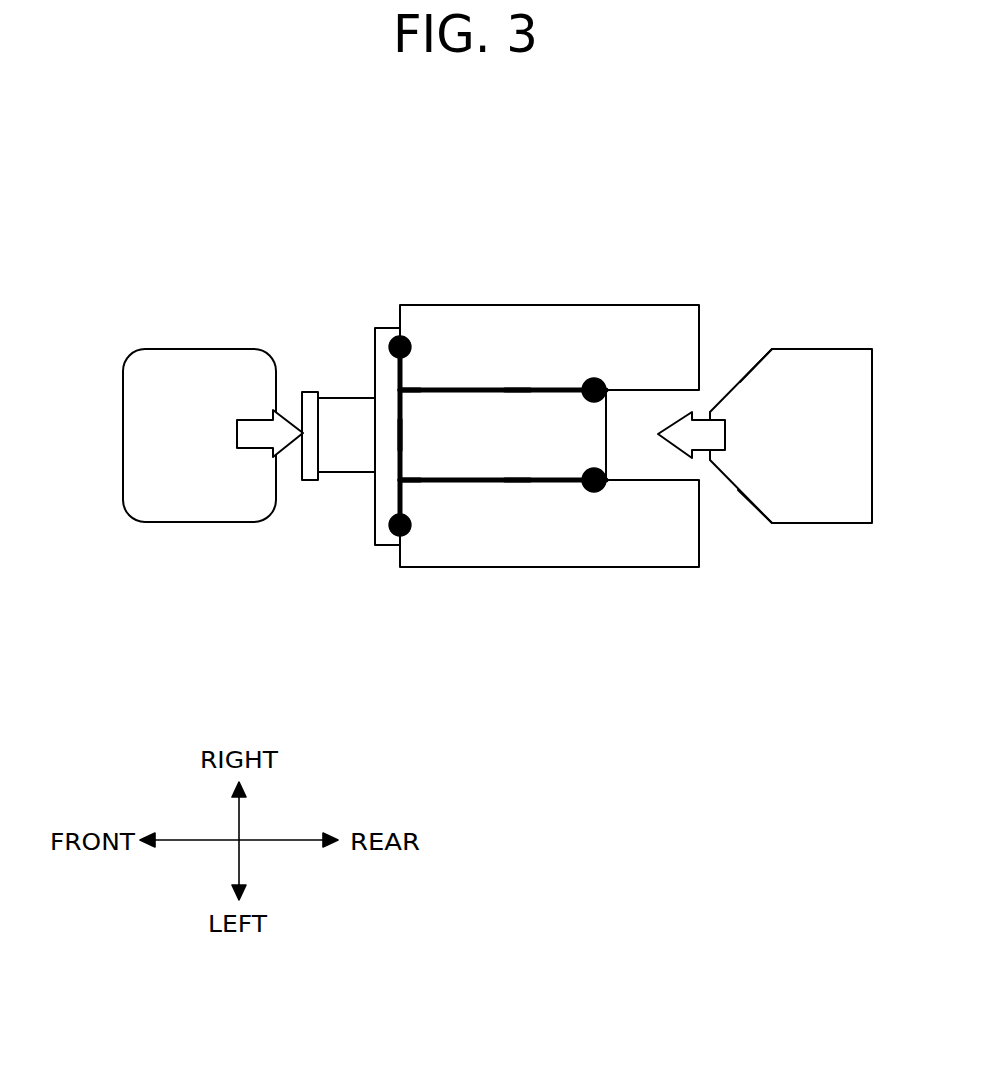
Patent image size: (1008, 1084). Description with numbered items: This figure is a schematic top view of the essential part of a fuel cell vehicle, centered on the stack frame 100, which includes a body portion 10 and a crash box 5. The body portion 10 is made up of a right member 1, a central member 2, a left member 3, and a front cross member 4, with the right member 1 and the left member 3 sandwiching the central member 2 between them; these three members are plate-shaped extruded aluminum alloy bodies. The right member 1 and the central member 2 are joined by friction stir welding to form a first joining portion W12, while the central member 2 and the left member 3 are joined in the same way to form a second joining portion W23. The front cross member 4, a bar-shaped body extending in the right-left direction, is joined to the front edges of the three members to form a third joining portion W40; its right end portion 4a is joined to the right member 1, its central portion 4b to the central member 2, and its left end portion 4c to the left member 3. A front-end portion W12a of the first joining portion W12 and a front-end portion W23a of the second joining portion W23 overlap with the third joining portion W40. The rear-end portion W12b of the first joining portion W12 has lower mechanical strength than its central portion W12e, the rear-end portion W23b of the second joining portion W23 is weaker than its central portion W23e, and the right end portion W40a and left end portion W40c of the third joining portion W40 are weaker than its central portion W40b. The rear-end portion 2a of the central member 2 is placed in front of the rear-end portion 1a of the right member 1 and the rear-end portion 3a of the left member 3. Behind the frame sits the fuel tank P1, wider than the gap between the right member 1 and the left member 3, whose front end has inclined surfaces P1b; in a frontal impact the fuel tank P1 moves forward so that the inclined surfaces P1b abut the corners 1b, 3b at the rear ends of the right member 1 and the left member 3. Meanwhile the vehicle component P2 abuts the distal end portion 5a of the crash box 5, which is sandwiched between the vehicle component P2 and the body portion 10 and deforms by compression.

The stack frame 100 is at (702, 176).
The right member 1 is at (675, 305).
The rear-end portion of the right member 1a is at (702, 380).
The corner of the right member 1b is at (707, 392).
The central member 2 is at (506, 449).
The rear-end portion of the central member 2a is at (608, 414).
The left member 3 is at (672, 568).
The rear-end portion of the left member 3a is at (702, 524).
The corner of the left member 3b is at (706, 487).
The front cross member 4 is at (364, 328).
The right end portion 4a is at (386, 328).
The central portion 4b is at (376, 428).
The left end portion 4c is at (380, 546).
The crash box 5 is at (352, 473).
The distal end portion of the crash box 5a is at (312, 392).
The body portion 10 is at (494, 305).
The first joining portion W12 is at (564, 388).
The front-end portion of the first joining portion W12a is at (406, 387).
The rear-end portion of the first joining portion W12b is at (596, 380).
The central portion of the first joining portion W12e is at (518, 388).
The second joining portion W23 is at (566, 484).
The front-end portion of the second joining portion W23a is at (406, 484).
The rear-end portion of the second joining portion W23b is at (599, 490).
The central portion of the second joining portion W23e is at (515, 484).
The third joining portion W40 is at (397, 470).
The right end portion of the third joining portion W40a is at (403, 338).
The central portion of the third joining portion W40b is at (397, 433).
The left end portion of the third joining portion W40c is at (406, 538).
The fuel tank P1 is at (836, 349).
The inclined surfaces P1b is at (740, 382).
The vehicle component P2 is at (199, 349).